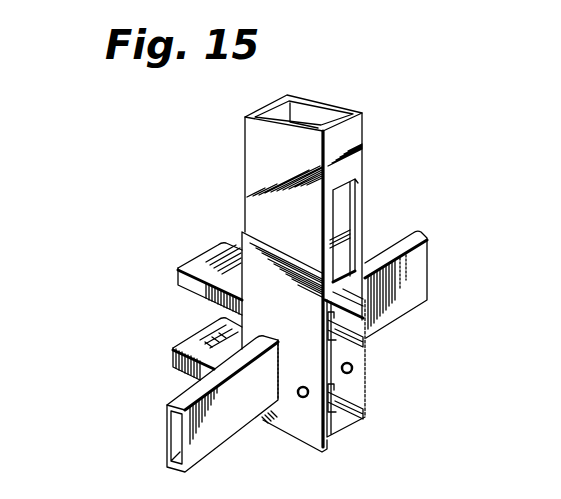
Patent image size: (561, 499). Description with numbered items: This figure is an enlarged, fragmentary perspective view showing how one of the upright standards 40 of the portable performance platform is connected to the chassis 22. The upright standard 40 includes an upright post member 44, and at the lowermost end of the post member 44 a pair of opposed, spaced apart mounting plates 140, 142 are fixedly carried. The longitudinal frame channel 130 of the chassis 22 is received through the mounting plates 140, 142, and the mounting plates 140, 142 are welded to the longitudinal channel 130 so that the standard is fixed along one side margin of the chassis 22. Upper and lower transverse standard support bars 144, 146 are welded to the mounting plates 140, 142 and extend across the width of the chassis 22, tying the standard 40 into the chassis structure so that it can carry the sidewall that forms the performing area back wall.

The upright standard 40 is at (341, 110).
The upright post member 44 is at (353, 165).
The longitudinal frame channel 130 is at (392, 248).
The chassis 22 is at (402, 317).
The mounting plate 140 is at (368, 388).
The mounting plate 142 is at (300, 430).
The upper transverse standard support bar 144 is at (212, 257).
The lower transverse standard support bar 146 is at (177, 378).